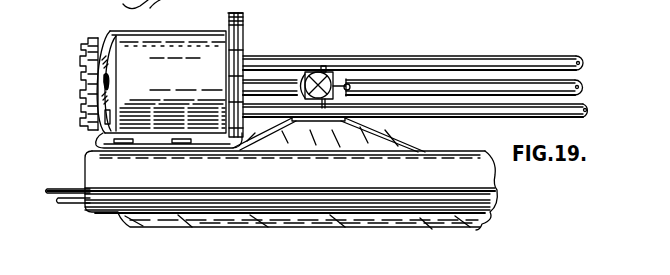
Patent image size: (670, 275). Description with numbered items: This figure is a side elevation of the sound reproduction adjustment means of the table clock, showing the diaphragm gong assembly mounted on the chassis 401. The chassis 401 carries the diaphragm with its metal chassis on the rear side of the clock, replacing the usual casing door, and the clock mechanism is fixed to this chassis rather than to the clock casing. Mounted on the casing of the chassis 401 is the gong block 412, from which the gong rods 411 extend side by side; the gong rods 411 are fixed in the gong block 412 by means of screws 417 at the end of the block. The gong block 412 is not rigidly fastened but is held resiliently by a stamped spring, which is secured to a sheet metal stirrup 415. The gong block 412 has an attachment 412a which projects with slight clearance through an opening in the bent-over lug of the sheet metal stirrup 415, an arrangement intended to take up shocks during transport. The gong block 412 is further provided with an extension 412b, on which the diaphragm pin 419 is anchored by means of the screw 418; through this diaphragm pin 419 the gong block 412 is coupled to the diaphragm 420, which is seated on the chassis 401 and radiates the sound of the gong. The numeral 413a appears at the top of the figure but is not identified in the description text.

The chassis 401 is at (302, 151).
The gong rods 411 is at (481, 112).
The gong block 412 is at (157, 58).
The attachment 412a is at (245, 54).
The extension 412b is at (298, 80).
The clamp 413a is at (229, 13).
The sheet metal stirrup 415 is at (160, 146).
The screws 417 is at (80, 78).
The screw 418 is at (332, 72).
The diaphragm pin 419 is at (343, 88).
The diaphragm 420 is at (381, 143).